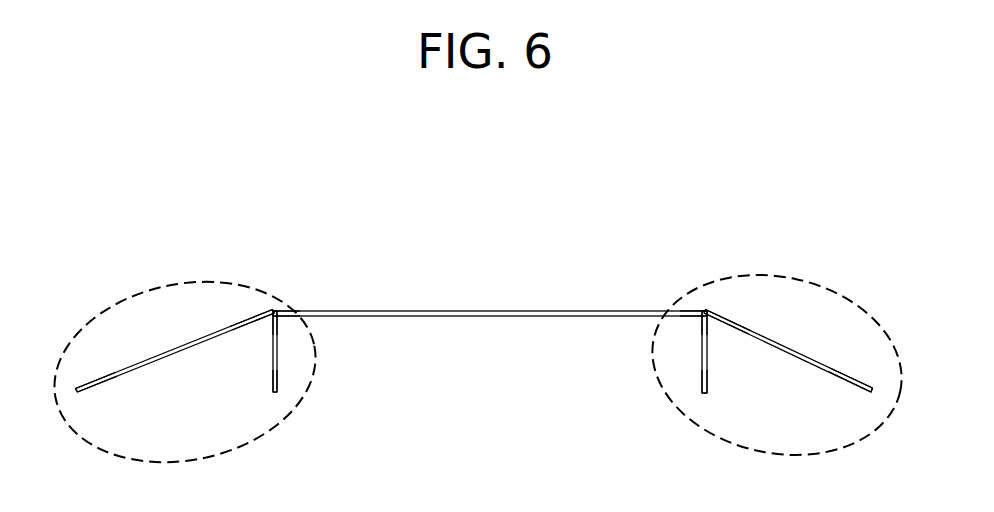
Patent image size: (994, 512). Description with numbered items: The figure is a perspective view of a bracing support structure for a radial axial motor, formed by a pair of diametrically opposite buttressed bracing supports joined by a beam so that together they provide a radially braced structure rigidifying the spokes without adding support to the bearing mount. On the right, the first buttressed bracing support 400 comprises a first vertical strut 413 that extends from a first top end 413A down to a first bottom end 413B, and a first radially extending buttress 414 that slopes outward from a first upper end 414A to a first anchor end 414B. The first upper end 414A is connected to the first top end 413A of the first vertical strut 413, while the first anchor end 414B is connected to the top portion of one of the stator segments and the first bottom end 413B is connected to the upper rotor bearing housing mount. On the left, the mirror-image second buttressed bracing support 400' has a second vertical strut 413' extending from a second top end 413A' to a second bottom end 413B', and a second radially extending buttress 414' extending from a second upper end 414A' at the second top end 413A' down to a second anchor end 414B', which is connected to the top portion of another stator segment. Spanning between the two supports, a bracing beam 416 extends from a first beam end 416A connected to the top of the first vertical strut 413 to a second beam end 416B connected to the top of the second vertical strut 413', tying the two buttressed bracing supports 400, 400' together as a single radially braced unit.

The buttressed bracing support 400 is at (776, 348).
The second buttressed bracing support 400' is at (185, 352).
The first vertical strut 413 is at (659, 356).
The second vertical strut 413' is at (326, 352).
The first top end 413A is at (639, 334).
The second top end 413A' is at (338, 335).
The first bottom end 413B is at (658, 406).
The second bottom end 413B' is at (321, 417).
The first radially extending buttress 414 is at (788, 351).
The second radially extending buttress 414' is at (175, 332).
The first upper end 414A is at (720, 276).
The second upper end 414A' is at (236, 280).
The first anchor end 414B is at (889, 348).
The second anchor end 414B' is at (74, 353).
The bracing beam 416 is at (538, 308).
The first beam end 416A is at (693, 311).
The second beam end 416B is at (287, 311).